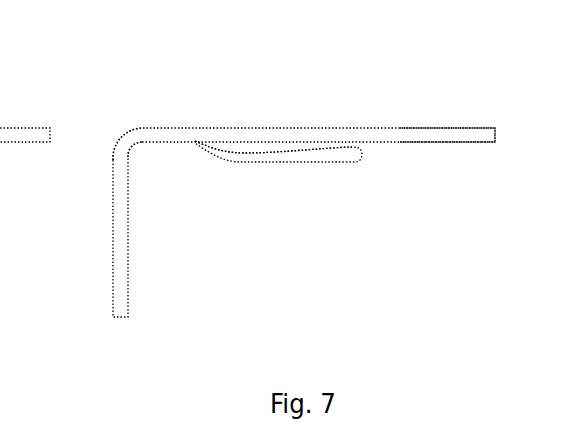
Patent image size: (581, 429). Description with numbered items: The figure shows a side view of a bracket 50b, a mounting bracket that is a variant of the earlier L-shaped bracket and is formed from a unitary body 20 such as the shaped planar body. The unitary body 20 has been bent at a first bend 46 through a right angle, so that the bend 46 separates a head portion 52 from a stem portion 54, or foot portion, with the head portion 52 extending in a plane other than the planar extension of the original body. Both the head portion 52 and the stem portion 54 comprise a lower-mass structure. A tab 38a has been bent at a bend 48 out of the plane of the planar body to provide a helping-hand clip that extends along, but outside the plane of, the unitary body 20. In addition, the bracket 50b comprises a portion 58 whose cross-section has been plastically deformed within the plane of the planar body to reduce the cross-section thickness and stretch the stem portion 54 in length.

The bracket 50b is at (110, 82).
The first bend 46 is at (135, 128).
The bend 48 is at (193, 142).
The head portion 52 is at (86, 210).
The unitary body 20 is at (348, 133).
The stem portion 54 is at (432, 92).
The tab 38a is at (330, 163).
The portion 58 is at (265, 126).